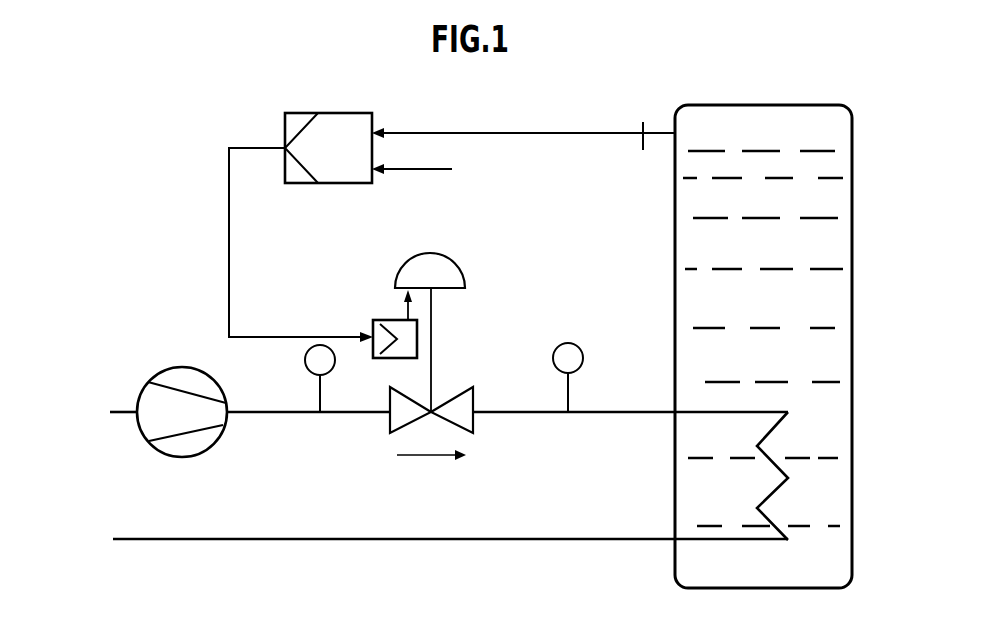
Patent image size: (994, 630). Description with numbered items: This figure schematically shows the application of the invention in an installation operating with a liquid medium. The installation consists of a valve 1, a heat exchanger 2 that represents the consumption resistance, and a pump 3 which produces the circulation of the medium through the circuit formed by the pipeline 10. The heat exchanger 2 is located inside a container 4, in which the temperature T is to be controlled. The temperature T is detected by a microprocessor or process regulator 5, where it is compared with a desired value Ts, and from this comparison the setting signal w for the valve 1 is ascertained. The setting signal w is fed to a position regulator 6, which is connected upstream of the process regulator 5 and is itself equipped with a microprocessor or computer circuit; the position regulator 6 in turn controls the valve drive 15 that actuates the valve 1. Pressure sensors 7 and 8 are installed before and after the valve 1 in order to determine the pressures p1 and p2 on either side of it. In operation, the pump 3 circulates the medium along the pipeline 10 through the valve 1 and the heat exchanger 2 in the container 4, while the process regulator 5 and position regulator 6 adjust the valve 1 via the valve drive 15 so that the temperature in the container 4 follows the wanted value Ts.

The valve 1 is at (474, 396).
The heat exchanger 2 is at (773, 493).
The pump 3 is at (145, 398).
The container 4 is at (826, 205).
The process regulator 5 is at (346, 130).
The position regulator 6 is at (396, 325).
The pressure sensor 7 is at (313, 362).
The pressure sensor 8 is at (575, 352).
The pipeline 10 is at (493, 540).
The valve drive 15 is at (445, 275).